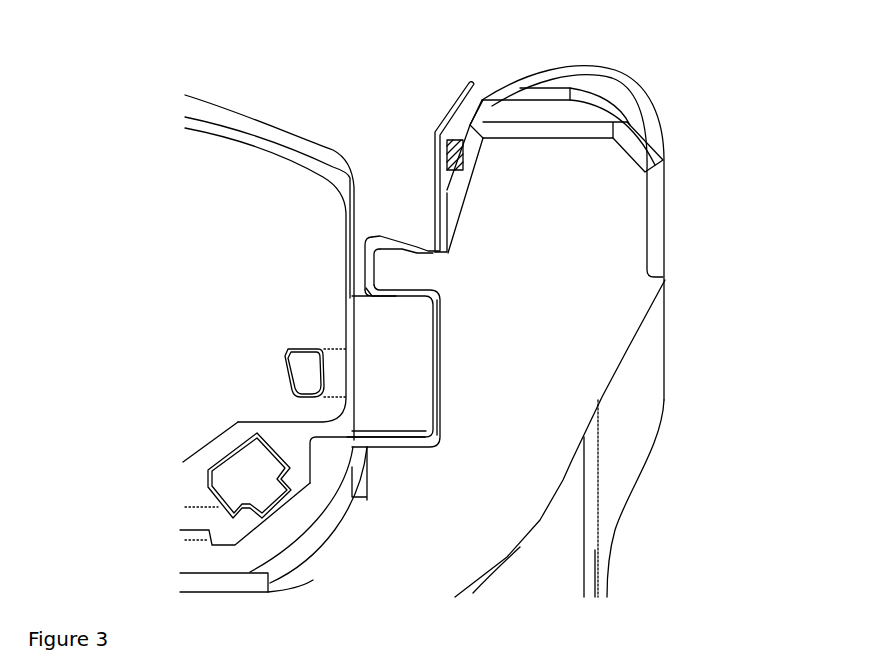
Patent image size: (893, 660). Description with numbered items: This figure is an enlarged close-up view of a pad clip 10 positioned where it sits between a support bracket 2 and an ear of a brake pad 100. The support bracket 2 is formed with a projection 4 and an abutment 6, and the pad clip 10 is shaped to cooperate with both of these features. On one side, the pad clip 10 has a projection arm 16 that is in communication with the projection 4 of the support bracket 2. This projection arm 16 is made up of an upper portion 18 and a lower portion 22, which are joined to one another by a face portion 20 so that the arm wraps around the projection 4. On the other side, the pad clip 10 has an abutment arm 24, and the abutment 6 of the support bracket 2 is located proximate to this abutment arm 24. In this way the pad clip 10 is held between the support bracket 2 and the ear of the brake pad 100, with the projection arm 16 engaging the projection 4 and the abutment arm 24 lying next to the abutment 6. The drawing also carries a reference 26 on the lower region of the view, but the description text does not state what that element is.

The support bracket 2 is at (603, 207).
The projection 4 is at (403, 264).
The abutment 6 is at (459, 341).
The pad clip 10 is at (421, 98).
The projection arm 16 is at (298, 230).
The upper portion 18 is at (383, 235).
The face portion 20 is at (367, 263).
The lower portion 22 is at (380, 288).
The abutment arm 24 is at (427, 352).
The sill 26 is at (345, 437).
The brake pad 100 is at (252, 173).